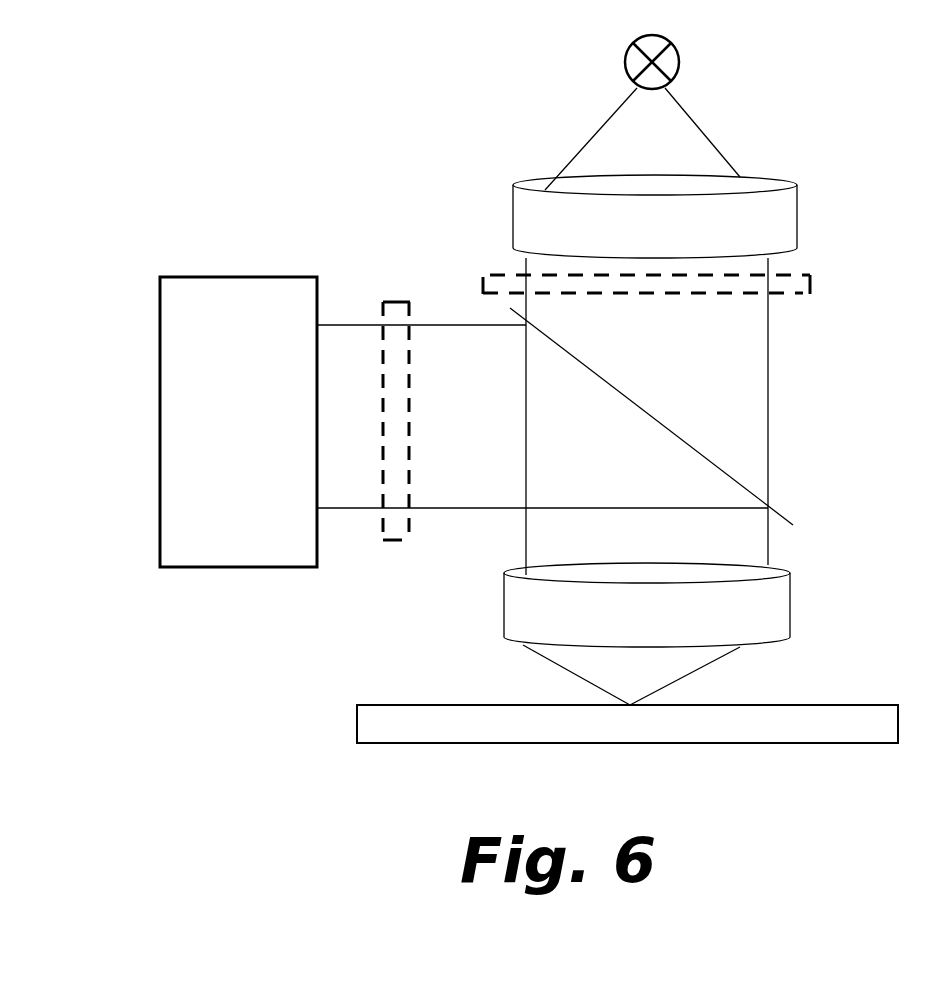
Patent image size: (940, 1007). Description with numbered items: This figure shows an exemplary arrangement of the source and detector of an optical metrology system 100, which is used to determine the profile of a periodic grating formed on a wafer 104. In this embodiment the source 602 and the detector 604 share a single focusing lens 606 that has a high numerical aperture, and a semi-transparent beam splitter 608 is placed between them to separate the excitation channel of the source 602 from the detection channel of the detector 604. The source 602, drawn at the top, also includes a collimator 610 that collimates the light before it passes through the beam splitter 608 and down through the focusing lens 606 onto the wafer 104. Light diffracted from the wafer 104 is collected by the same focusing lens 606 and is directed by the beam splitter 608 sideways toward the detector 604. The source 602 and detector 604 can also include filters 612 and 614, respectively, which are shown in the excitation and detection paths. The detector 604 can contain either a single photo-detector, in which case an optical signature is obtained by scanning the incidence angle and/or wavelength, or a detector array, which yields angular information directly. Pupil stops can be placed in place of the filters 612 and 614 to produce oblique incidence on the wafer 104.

The optical metrology system 100 is at (425, 80).
The wafer 104 is at (627, 724).
The source 602 is at (870, 178).
The detector 604 is at (302, 238).
The focusing lens 606 is at (647, 634).
The semi-transparent beam splitter 608 is at (780, 515).
The collimator 610 is at (655, 216).
The filter 612 is at (812, 288).
The filter 614 is at (383, 532).